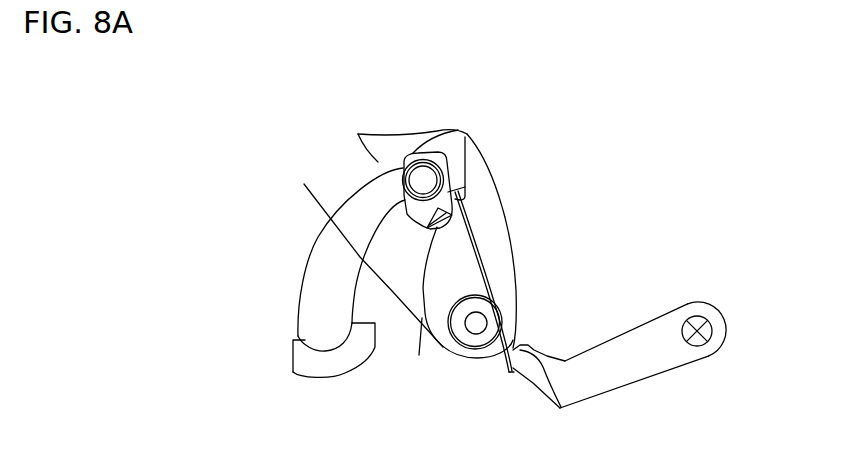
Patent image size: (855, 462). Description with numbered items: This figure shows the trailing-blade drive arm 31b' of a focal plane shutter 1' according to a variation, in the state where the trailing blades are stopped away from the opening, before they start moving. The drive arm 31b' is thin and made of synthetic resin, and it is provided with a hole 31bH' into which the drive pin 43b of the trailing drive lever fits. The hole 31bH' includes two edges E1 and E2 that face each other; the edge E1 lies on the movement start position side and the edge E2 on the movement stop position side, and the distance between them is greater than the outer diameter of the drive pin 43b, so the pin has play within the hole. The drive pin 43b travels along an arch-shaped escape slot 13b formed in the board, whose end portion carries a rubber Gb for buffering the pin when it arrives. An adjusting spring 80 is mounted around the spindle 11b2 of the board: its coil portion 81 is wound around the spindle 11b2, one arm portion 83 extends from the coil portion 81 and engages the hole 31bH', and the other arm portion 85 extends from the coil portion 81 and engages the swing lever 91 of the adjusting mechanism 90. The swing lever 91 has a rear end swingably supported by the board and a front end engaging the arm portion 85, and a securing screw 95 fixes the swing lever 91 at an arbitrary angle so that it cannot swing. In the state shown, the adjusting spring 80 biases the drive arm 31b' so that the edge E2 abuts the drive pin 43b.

The focal plane shutter 1' is at (689, 147).
The escape slot 13b is at (302, 263).
The rubber Gb is at (305, 354).
The drive pin 43b is at (420, 172).
The edge E2 is at (377, 161).
The edge E1 is at (467, 134).
The drive arm 31b' is at (510, 246).
The arm portion 83 is at (473, 243).
The adjusting spring 80 is at (493, 283).
The arm portion 85 is at (515, 348).
The adjusting mechanism 90 is at (675, 372).
The swing lever 91 is at (623, 373).
The securing screw 95 is at (713, 318).
The coil portion 81 is at (471, 338).
The spindle 11b2 is at (469, 337).
The hole 31bH' is at (408, 349).